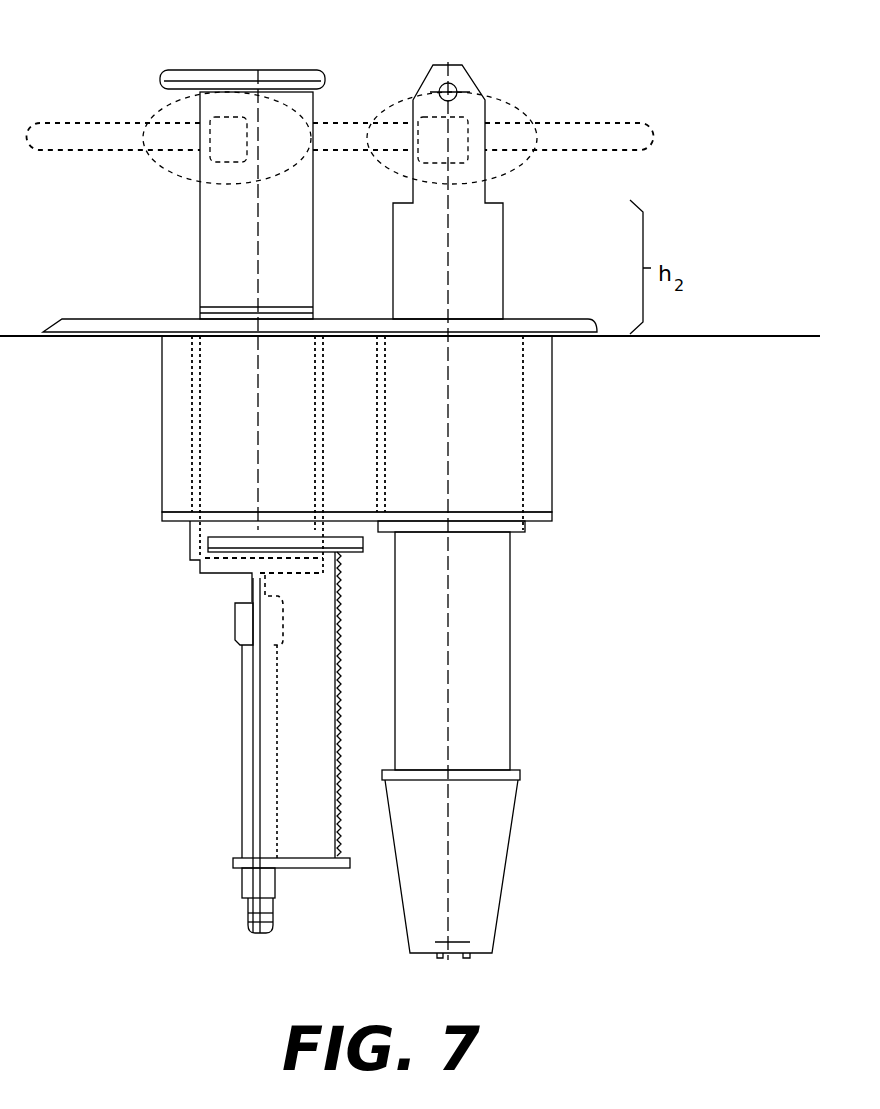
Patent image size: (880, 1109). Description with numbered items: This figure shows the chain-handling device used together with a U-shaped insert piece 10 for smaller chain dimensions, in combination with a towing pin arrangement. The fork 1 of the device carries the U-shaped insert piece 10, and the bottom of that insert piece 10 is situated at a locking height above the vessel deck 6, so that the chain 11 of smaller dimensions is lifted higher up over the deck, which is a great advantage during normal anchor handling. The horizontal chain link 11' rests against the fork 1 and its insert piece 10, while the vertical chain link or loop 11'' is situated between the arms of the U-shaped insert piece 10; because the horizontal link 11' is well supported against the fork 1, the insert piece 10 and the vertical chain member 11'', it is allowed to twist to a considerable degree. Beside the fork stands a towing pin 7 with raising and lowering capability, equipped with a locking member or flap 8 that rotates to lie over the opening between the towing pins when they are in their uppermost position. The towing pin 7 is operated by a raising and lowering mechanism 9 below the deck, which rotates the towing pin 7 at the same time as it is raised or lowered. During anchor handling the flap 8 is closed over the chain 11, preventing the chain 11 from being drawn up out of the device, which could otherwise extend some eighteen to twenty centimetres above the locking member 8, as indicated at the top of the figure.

The fork 1 is at (472, 501).
The U-shaped insert piece 10 is at (472, 100).
The vessel deck 6 is at (748, 336).
The towing pins 7 is at (210, 240).
The locking members 8 is at (209, 82).
The raising and lowering mechanism 9 is at (148, 525).
The chain 11 is at (507, 107).
The horizontal chain link 11' is at (596, 119).
The vertical chain link 11'' is at (282, 92).